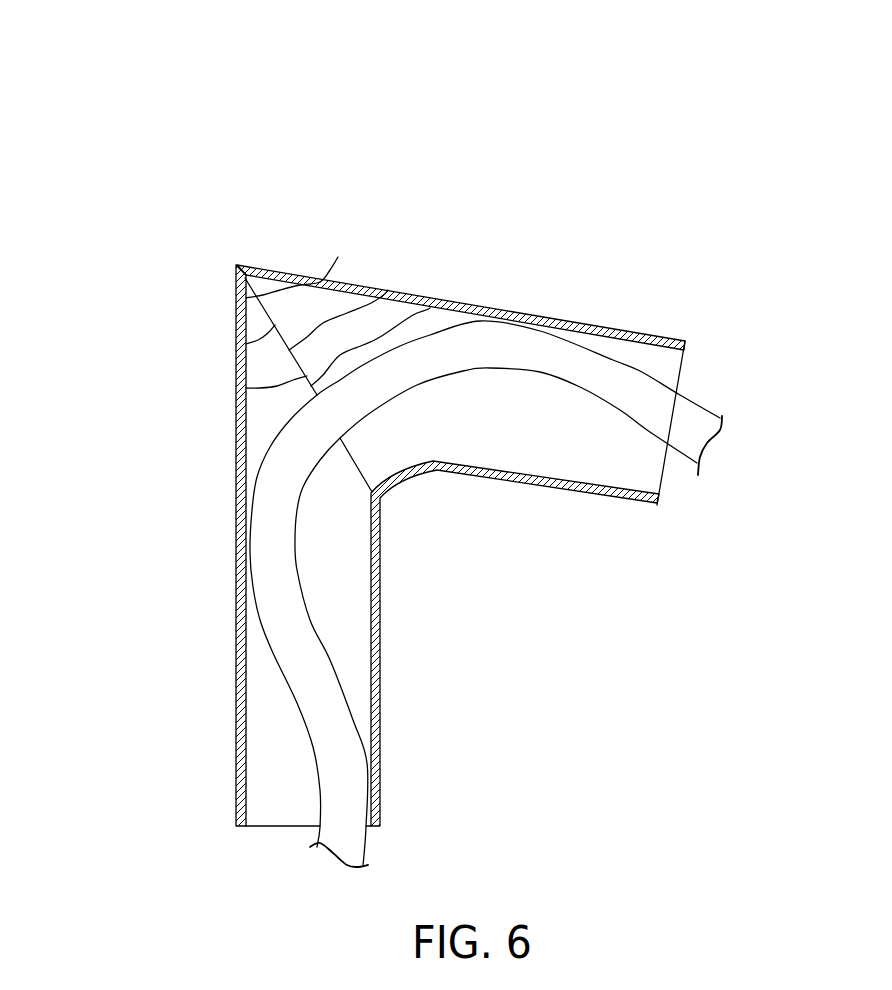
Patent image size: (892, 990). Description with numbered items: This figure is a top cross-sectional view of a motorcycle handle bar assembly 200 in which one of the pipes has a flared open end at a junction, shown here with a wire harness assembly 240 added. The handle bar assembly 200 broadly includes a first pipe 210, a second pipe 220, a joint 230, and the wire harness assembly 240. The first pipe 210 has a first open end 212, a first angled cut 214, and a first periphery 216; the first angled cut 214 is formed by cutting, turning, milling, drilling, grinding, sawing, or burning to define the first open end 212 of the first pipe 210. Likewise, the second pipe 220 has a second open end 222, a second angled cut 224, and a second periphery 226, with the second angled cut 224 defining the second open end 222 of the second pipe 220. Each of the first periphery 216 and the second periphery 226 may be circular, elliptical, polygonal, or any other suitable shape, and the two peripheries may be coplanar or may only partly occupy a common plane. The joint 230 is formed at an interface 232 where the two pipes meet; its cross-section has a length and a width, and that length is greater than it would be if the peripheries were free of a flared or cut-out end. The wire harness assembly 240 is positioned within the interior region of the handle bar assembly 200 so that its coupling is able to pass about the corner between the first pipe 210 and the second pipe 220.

The handle bar assembly 200 is at (418, 82).
The first pipe 210 is at (236, 645).
The first open end 212 is at (237, 302).
The first angled cut 214 is at (237, 343).
The first periphery 216 is at (237, 388).
The second pipe 220 is at (653, 337).
The second open end 222 is at (341, 256).
The second angled cut 224 is at (388, 290).
The second periphery 226 is at (430, 308).
The joint 230 is at (237, 265).
The interface 232 is at (237, 263).
The wire harness assembly 240 is at (690, 402).